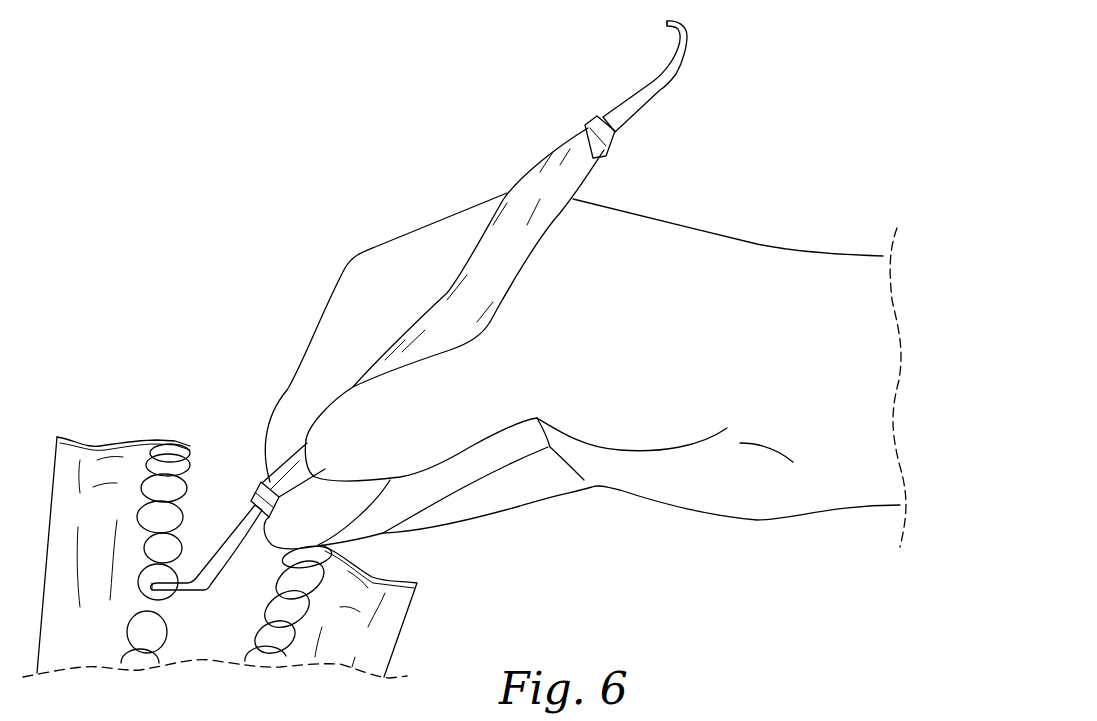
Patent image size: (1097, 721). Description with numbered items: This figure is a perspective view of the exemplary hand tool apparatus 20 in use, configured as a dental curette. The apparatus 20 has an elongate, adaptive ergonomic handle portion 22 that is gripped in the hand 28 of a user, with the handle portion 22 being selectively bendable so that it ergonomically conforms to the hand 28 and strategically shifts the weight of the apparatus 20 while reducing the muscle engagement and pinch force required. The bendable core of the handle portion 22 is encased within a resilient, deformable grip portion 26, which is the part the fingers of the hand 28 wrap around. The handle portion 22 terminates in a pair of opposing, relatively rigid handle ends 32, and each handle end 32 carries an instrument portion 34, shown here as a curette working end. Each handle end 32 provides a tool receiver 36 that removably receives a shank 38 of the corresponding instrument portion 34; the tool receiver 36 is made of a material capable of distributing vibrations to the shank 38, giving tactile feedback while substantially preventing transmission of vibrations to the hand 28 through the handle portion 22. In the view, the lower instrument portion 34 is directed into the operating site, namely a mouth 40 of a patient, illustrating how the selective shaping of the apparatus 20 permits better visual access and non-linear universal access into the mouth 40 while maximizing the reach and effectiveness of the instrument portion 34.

The hand tool apparatus 20 is at (457, 125).
The handle portion 22 is at (456, 246).
The grip portion 26 is at (533, 220).
The hand 28 is at (756, 258).
The handle end 32 is at (562, 126).
The instrument portion 34 is at (702, 47).
The tool receiver 36 is at (612, 140).
The shank 38 is at (615, 108).
The mouth 40 is at (159, 422).